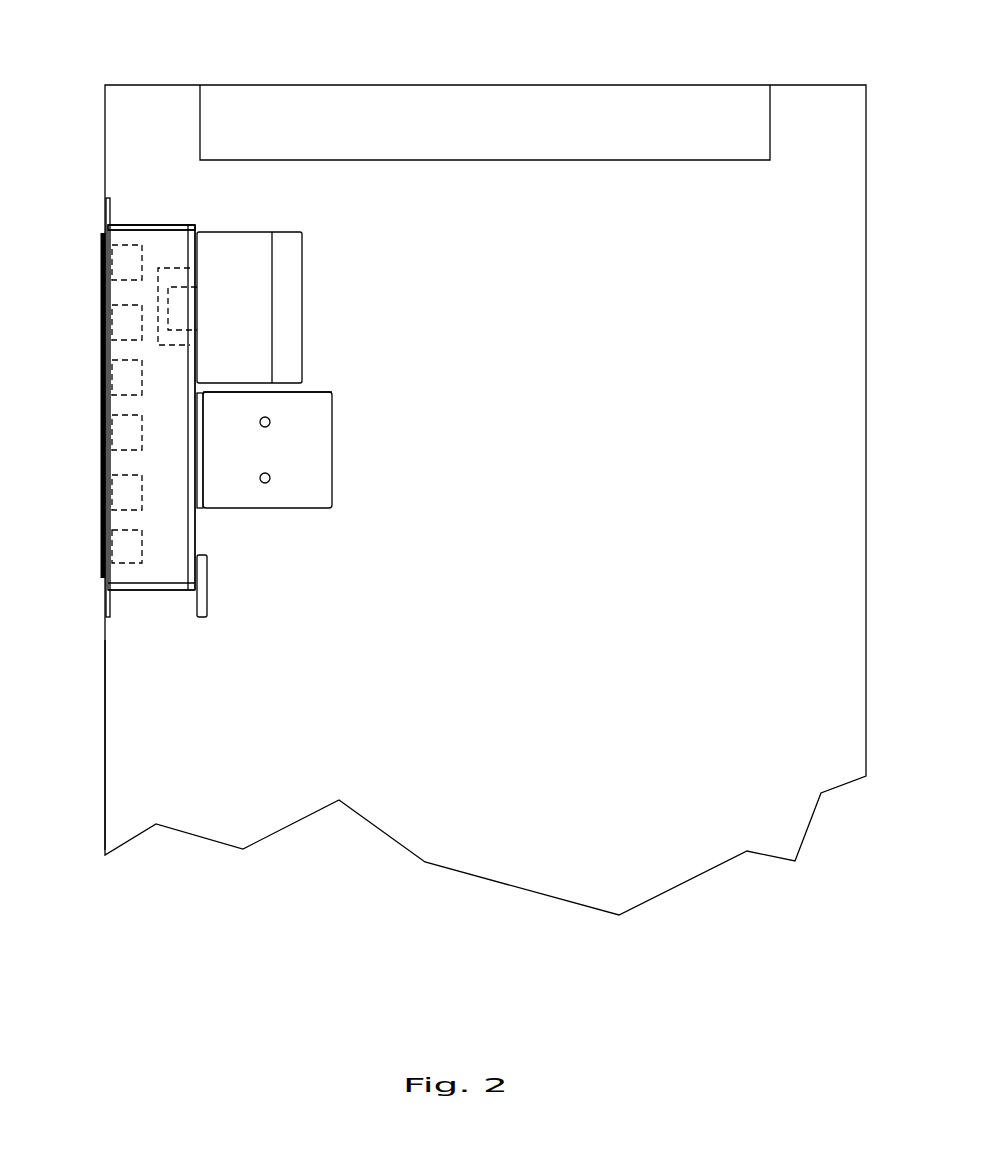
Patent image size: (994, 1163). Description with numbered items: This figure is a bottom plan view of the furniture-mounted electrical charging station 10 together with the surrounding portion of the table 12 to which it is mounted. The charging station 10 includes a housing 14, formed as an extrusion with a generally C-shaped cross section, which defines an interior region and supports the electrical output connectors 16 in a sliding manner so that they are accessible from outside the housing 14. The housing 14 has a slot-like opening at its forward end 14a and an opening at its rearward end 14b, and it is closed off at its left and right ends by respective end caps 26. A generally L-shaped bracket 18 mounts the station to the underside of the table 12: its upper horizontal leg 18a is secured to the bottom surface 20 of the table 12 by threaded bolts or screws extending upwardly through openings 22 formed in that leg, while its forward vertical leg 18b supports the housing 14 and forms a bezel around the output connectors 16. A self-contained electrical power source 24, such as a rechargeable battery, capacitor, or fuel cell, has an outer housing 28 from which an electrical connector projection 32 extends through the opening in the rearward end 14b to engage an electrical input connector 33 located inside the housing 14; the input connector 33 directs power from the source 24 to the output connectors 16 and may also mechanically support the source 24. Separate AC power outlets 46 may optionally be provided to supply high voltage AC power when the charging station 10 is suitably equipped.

The furniture-mounted electrical charging station 10 is at (186, 166).
The table 12 is at (872, 238).
The housing 14 is at (177, 535).
The forward end 14a is at (124, 208).
The rearward end 14b is at (198, 523).
The electrical output connectors 16 is at (101, 436).
The L-shaped bracket 18 is at (344, 508).
The upper horizontal leg 18a is at (338, 395).
The forward vertical leg 18b is at (106, 206).
The bottom surface 20 is at (191, 716).
The openings 22 is at (280, 422).
The self-contained electrical power source 24 is at (318, 253).
The end caps 26 is at (150, 224).
The outer housing 28 is at (286, 307).
The electrical connector projection 32 is at (178, 305).
The electrical input connector 33 is at (173, 282).
The AC power outlets 46 is at (101, 264).